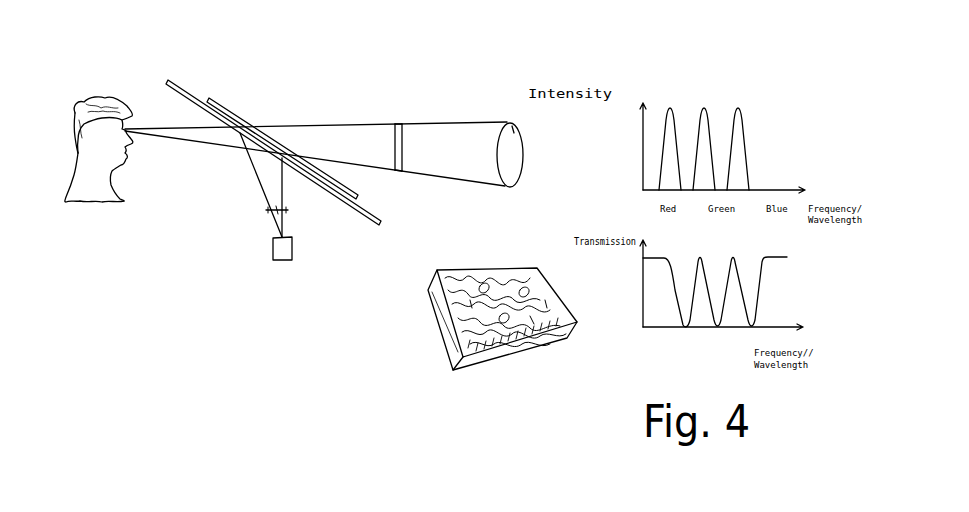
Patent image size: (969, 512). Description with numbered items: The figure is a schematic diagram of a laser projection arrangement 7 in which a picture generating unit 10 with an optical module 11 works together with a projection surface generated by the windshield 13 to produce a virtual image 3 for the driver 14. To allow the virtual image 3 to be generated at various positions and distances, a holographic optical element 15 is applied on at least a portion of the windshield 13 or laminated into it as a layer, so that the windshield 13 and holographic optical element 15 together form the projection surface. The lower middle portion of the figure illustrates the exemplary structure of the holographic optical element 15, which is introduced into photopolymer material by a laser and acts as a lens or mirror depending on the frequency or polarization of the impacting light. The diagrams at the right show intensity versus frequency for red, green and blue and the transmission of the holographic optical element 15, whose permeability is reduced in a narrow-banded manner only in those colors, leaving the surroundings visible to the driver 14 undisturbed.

The driver 14 is at (97, 97).
The windshield 13 is at (190, 84).
The holographic optical element 15 is at (313, 158).
The virtual image 3 is at (506, 110).
The optical module 11 is at (288, 206).
The picture generating unit 10 is at (292, 248).
The laser projection arrangement 7 is at (187, 231).